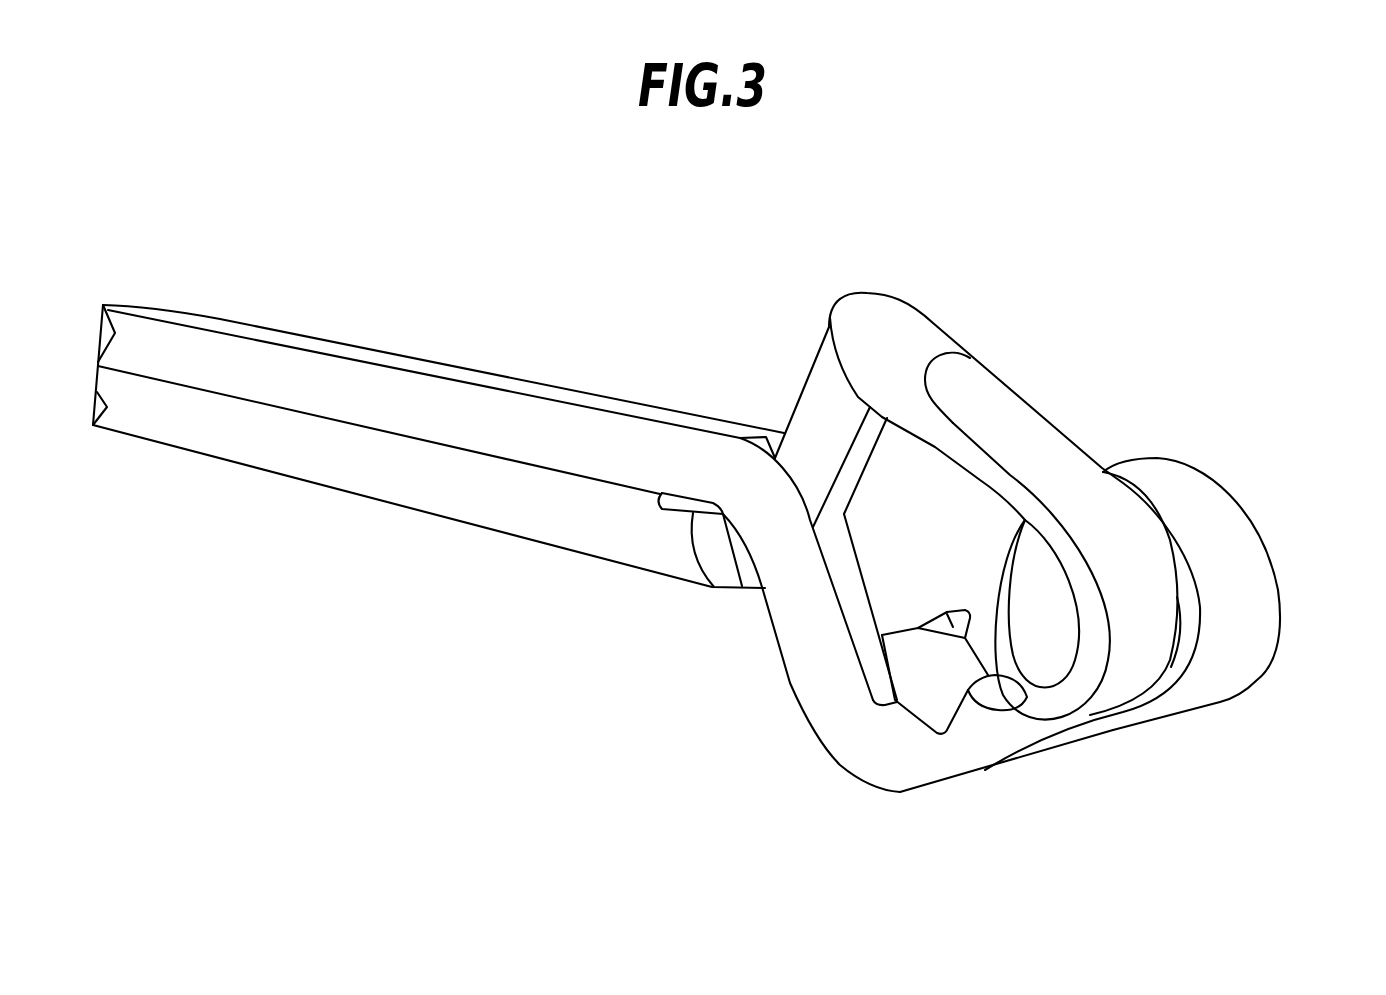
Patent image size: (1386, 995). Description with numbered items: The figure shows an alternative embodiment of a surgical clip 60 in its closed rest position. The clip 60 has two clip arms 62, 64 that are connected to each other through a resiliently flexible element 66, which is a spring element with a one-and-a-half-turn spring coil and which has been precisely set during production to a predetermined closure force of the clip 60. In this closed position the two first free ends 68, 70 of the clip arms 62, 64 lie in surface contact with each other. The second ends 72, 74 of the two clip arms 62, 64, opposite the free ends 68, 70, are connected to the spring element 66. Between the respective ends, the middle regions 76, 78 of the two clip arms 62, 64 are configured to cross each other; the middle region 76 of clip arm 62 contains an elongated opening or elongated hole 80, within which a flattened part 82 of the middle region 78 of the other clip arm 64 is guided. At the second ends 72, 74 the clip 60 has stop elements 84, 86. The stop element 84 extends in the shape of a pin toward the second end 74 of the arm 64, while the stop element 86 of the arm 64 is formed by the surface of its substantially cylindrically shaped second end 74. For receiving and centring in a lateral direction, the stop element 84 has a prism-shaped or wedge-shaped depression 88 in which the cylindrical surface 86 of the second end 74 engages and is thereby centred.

The surgical clip 60 is at (646, 305).
The clip arm 62 is at (444, 342).
The clip arm 64 is at (385, 518).
The resiliently flexible element 66 is at (1299, 643).
The first free end 68 is at (197, 320).
The first free end 70 is at (157, 443).
The second end 72 is at (922, 790).
The second end 74 is at (935, 322).
The middle region 76 is at (778, 686).
The middle region 78 is at (772, 413).
The elongated hole 80 is at (847, 587).
The flattened part 82 is at (820, 410).
The stop element 84 is at (942, 697).
The stop element 86 is at (907, 438).
The wedge-shaped depression 88 is at (950, 622).